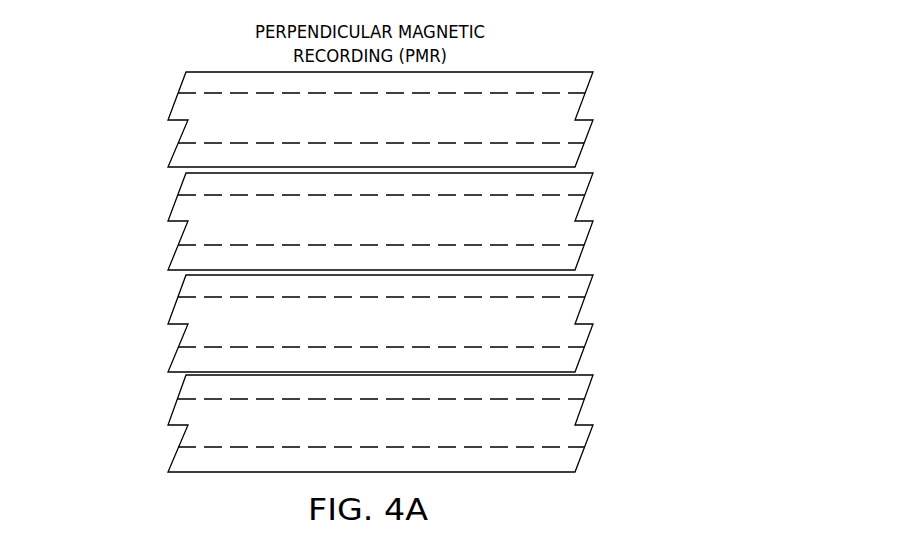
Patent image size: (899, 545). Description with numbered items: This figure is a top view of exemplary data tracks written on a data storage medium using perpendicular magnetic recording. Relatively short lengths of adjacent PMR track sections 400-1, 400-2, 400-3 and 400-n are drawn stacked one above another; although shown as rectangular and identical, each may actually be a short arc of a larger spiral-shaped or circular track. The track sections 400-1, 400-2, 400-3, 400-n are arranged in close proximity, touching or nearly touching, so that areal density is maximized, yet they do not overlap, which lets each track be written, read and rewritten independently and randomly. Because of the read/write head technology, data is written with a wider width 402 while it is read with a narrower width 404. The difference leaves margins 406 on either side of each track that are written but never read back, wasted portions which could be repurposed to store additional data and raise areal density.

The PMR track section 400-1 is at (399, 123).
The PMR track section 400-2 is at (148, 222).
The PMR track section 400-3 is at (148, 322).
The PMR track section 400-n is at (148, 424).
The write width 402 is at (455, 123).
The read width 404 is at (608, 100).
The margins 406 is at (608, 72).